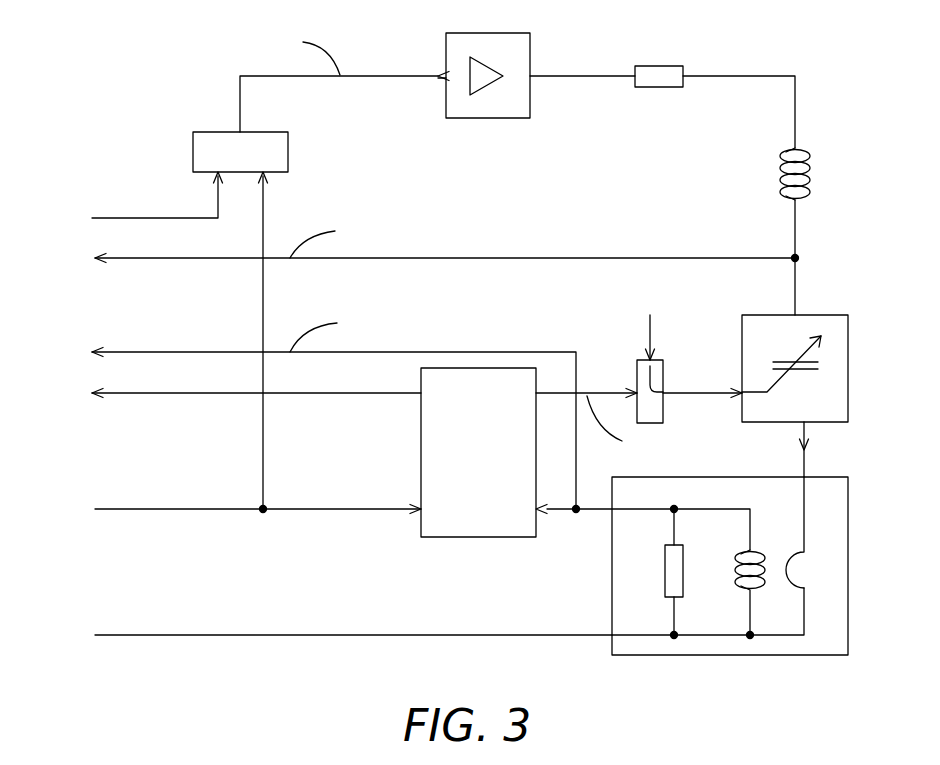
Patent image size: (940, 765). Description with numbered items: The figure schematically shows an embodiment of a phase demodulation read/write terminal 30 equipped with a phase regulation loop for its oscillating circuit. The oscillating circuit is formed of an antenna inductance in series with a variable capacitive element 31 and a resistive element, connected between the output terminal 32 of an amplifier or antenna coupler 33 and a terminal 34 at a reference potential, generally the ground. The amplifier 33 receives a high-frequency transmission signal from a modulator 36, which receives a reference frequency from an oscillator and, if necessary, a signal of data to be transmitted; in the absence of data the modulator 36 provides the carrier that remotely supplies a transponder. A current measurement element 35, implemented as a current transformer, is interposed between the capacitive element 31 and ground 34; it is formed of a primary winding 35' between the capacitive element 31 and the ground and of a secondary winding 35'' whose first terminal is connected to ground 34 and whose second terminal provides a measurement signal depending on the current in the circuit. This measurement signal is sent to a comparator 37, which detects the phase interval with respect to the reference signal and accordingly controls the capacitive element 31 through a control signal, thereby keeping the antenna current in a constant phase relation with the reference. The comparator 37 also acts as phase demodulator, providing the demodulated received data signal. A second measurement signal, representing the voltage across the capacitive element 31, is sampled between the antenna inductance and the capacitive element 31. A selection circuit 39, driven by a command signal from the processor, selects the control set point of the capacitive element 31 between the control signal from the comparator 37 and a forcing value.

The terminal 30 is at (113, 101).
The capacitive element 31 is at (825, 314).
The output terminal 32 is at (563, 76).
The amplifier 33 is at (446, 46).
The terminal at a reference potential 34 is at (358, 633).
The element for measuring the current 35 is at (757, 563).
The primary winding 35' is at (844, 532).
The secondary winding 35'' is at (769, 562).
The modulator 36 is at (288, 135).
The comparator 37 is at (421, 477).
The circuit for selecting the control set point 39 is at (639, 361).